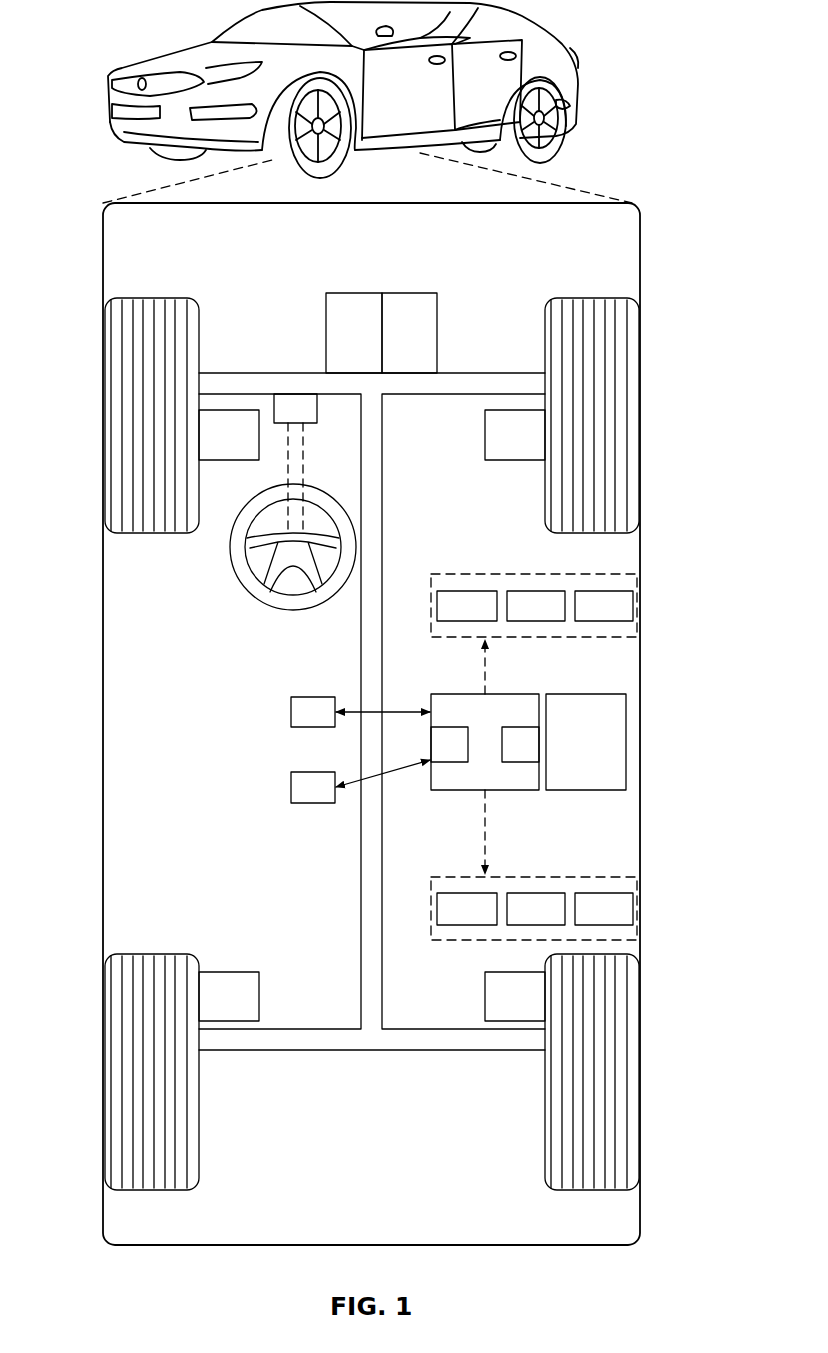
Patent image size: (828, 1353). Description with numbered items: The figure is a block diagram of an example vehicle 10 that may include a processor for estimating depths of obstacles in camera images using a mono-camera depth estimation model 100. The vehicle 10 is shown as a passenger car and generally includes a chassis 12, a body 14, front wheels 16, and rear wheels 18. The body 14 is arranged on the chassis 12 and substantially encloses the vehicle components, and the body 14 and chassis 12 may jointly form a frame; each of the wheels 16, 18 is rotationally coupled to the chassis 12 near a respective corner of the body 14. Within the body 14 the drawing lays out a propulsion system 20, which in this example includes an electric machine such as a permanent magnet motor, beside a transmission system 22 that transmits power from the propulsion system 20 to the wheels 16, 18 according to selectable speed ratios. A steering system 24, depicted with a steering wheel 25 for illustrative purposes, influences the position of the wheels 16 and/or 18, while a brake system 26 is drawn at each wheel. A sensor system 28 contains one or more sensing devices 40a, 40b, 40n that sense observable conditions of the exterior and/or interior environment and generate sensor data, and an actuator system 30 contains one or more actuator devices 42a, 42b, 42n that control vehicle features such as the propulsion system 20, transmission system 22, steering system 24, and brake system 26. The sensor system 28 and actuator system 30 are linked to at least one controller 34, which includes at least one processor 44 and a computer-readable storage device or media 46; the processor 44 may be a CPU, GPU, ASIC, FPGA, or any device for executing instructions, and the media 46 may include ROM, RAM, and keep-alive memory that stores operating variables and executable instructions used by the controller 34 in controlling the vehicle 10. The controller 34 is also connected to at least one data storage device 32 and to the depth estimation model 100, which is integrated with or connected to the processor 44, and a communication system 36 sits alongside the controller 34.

The vehicle 10 is at (118, 80).
The chassis 12 is at (372, 1052).
The body 14 is at (103, 614).
The front wheels 16 is at (120, 368).
The rear wheels 18 is at (120, 1088).
The propulsion system 20 is at (333, 333).
The transmission system 22 is at (418, 333).
The steering system 24 is at (250, 600).
The steering wheel 25 is at (296, 600).
The brake system 26 is at (245, 440).
The sensor system 28 is at (480, 572).
The actuator system 30 is at (580, 875).
The data storage device 32 is at (300, 717).
The controller 34 is at (445, 710).
The communication system 36 is at (577, 708).
The sensing device 40a is at (450, 598).
The sensing device 40b is at (522, 606).
The sensing device 40n is at (622, 610).
The actuator device 42a is at (458, 905).
The actuator device 42b is at (540, 905).
The actuator device 42n is at (622, 912).
The processor 44 is at (440, 745).
The computer-readable storage device or media 46 is at (512, 738).
The mono-camera depth estimation model 100 is at (302, 790).